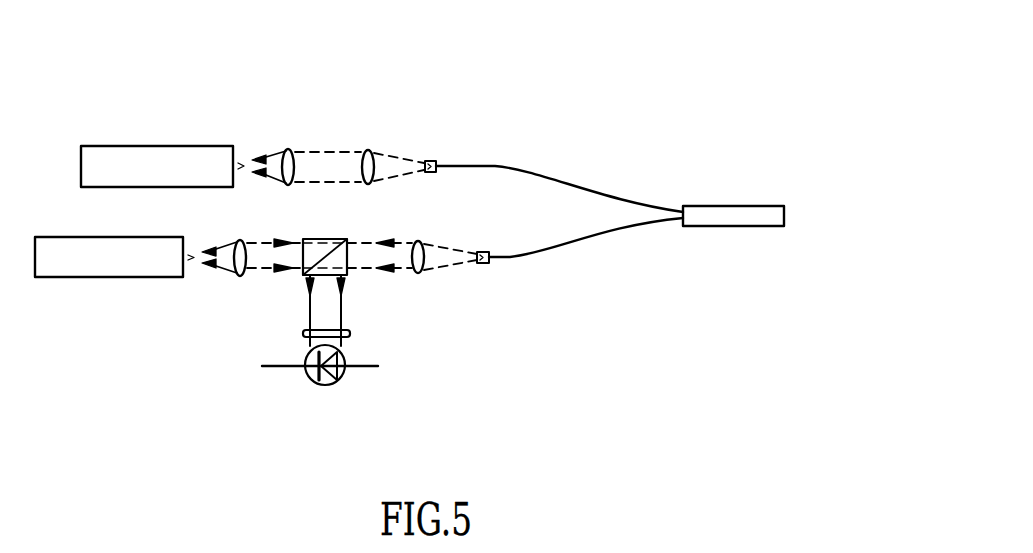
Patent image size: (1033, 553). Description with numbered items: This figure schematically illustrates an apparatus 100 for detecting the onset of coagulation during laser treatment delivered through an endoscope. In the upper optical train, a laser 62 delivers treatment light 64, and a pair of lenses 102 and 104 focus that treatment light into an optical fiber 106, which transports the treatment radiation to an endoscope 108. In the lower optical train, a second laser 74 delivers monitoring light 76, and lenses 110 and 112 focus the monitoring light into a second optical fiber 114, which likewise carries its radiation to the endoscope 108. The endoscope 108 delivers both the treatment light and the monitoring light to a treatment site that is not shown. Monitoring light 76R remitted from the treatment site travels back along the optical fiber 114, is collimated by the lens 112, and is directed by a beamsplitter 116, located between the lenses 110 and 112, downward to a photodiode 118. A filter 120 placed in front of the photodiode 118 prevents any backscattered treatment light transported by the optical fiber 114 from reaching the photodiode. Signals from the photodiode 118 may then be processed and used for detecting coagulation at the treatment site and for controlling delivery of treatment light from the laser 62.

The apparatus 100 is at (692, 53).
The laser 62 is at (149, 147).
The treatment light 64 is at (272, 150).
The lens 102 is at (292, 149).
The lens 104 is at (372, 149).
The optical fiber 106 is at (516, 168).
The endoscope 108 is at (700, 205).
The optical fiber 114 is at (597, 238).
The laser 74 is at (146, 277).
The monitoring light 76 is at (230, 268).
The lens 110 is at (259, 225).
The beamsplitter 116 is at (340, 242).
The lens 112 is at (420, 242).
The remitted monitoring light 76R is at (368, 272).
The filter 120 is at (303, 333).
The photodiode 118 is at (309, 383).